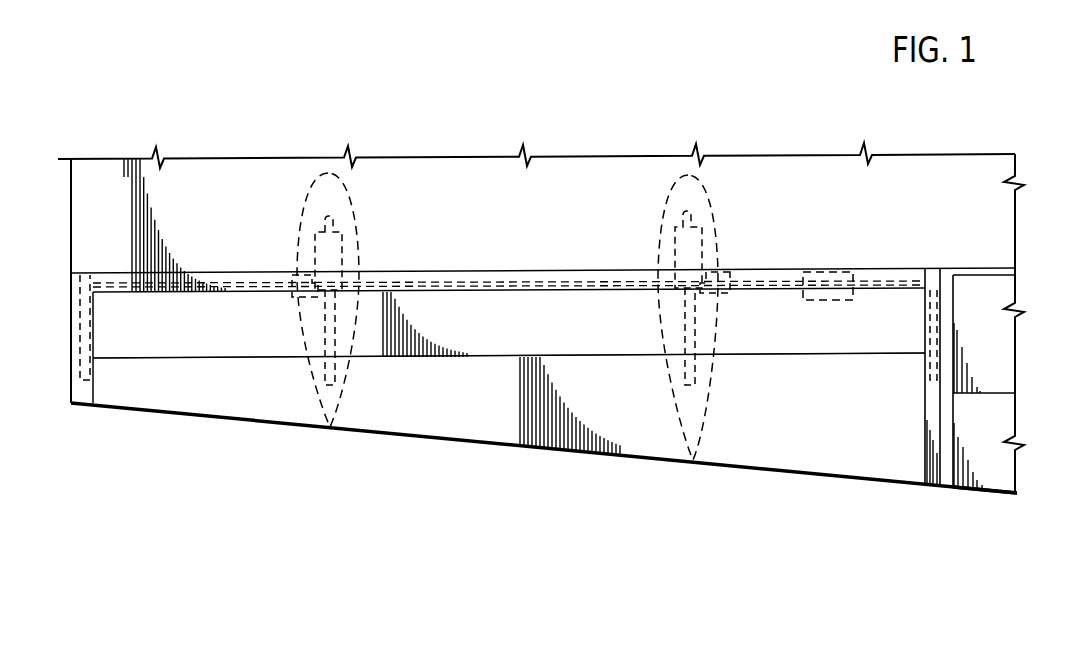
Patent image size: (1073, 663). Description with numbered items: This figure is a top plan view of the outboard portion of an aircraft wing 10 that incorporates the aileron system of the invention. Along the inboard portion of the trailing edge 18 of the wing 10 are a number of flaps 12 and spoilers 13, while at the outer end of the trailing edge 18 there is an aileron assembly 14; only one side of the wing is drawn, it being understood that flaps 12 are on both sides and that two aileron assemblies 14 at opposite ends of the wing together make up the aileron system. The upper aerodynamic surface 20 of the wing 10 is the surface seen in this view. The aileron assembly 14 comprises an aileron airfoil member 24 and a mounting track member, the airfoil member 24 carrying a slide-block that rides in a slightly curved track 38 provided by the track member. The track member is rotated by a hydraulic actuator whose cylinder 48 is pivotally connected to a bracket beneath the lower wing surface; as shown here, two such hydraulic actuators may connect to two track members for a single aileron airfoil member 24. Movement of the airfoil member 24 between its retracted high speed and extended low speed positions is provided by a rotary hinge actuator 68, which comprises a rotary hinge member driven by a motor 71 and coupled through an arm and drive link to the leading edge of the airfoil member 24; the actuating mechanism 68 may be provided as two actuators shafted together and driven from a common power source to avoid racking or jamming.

The aircraft wing 10 is at (107, 150).
The flaps 12 is at (1005, 475).
The spoilers 13 is at (1008, 353).
The aileron assembly 14 is at (434, 455).
The trailing edge 18 is at (975, 493).
The upper aerodynamic surface 20 is at (959, 160).
The aileron airfoil member 24 is at (400, 430).
The track 38 is at (90, 345).
The cylinder 48 is at (342, 262).
The rotary hinge actuator 68 is at (290, 284).
The motor 71 is at (833, 266).